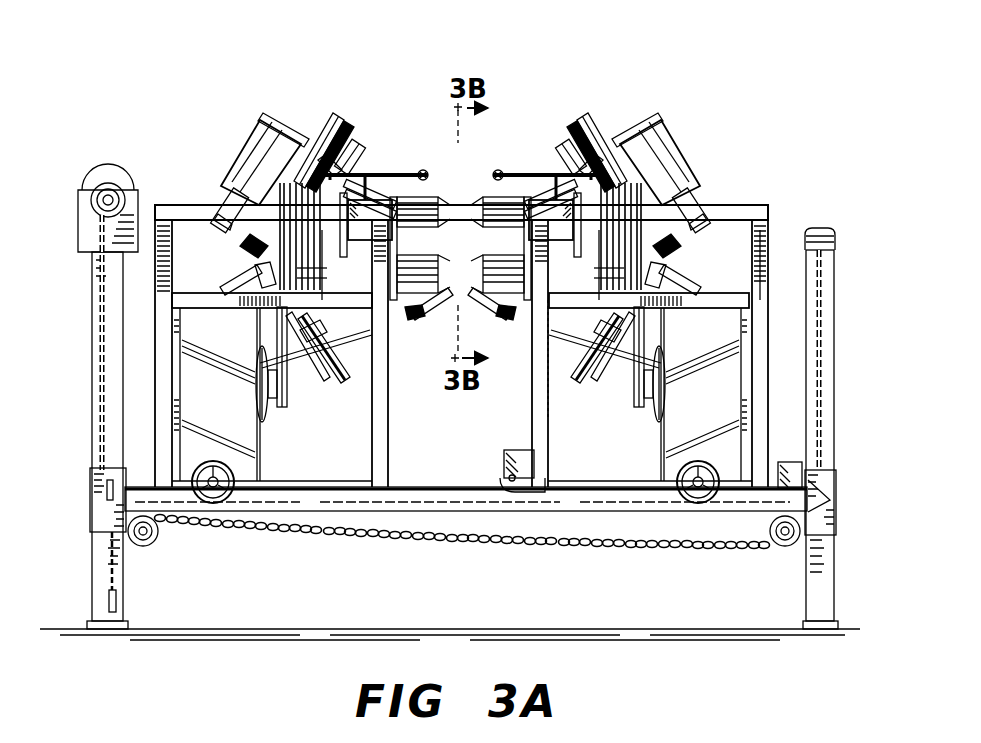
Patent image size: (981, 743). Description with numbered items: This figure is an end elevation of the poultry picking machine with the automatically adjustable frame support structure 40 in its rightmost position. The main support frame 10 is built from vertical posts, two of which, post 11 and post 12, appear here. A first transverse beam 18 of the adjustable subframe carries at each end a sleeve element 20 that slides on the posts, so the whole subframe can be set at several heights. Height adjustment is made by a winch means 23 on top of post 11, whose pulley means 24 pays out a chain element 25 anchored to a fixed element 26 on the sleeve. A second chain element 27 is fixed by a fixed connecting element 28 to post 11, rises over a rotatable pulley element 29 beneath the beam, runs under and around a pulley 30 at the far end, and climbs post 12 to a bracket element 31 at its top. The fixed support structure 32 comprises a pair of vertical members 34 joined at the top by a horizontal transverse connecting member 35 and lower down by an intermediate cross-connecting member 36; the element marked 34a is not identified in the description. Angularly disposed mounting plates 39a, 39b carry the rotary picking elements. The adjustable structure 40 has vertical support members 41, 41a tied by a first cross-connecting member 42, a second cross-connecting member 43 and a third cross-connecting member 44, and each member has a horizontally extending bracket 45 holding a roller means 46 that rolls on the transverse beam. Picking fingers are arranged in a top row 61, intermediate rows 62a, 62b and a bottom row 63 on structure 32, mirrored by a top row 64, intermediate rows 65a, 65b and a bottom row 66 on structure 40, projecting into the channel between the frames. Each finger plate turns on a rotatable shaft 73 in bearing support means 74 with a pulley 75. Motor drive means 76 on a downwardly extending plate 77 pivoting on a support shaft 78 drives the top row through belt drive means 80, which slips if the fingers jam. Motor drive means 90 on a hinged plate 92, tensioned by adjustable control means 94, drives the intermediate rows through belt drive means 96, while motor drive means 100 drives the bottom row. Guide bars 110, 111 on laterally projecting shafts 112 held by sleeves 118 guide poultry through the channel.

The main support frame 10 is at (806, 589).
The post means 11 is at (93, 566).
The post means 12 is at (834, 576).
The first transverse beam 18 is at (436, 496).
The sleeve element 20 is at (92, 526).
The winch means 23 is at (98, 163).
The pulley means 24 is at (96, 199).
The chain element 25 is at (96, 331).
The fixed element 26 is at (106, 490).
The second chain element 27 is at (354, 534).
The fixed connecting element 28 is at (118, 598).
The rotatable pulley element 29 is at (150, 542).
The pulley 30 is at (781, 545).
The bracket element 31 is at (835, 250).
The fixed support structure 32 is at (397, 430).
The vertical members 34 is at (182, 318).
The left partition 34a is at (372, 430).
The horizontal transverse connecting member 35 is at (175, 207).
The intermediate cross-connecting member 36 is at (205, 294).
The angularly disposed mounting plate 39a is at (348, 170).
The angularly disposed mounting plate 39b is at (376, 336).
The automatically adjustable frame support structure 40 is at (531, 367).
The vertically extending support member 41 is at (536, 375).
The vertically extending support member 41a is at (772, 237).
The first cross-connecting member 42 is at (741, 207).
The second cross-connecting member 43 is at (715, 298).
The third cross-connecting member 44 is at (608, 481).
The horizontally extending bracket 45 is at (520, 452).
The roller means 46 is at (503, 482).
The top row of picking fingers 61 is at (438, 216).
The intermediate row of picking fingers 62a is at (370, 220).
The intermediate row of picking fingers 62b is at (450, 259).
The bottom row of picking fingers 63 is at (430, 302).
The top row of picking fingers 64 is at (488, 200).
The intermediate row of picking fingers 65a is at (553, 220).
The intermediate row of picking fingers 65b is at (488, 272).
The bottom row of picking fingers 66 is at (483, 302).
The rotatable shaft 73 is at (381, 172).
The bearing support means 74 is at (353, 160).
The pulley 75 is at (317, 140).
The motor drive means 76 is at (223, 186).
The downwardly extending plate 77 is at (245, 160).
The support shaft 78 is at (265, 117).
The belt drive means 80 is at (341, 131).
The motor drive means 90 is at (268, 420).
The plate 92 is at (230, 410).
The adjustable control means 94 is at (212, 461).
The belt drive means 96 is at (291, 376).
The motor drive means 100 is at (228, 278).
The guide bar 110 is at (429, 177).
The guide bar 111 is at (498, 168).
The laterally projecting shaft 112 is at (432, 174).
The sleeve 118 is at (460, 241).